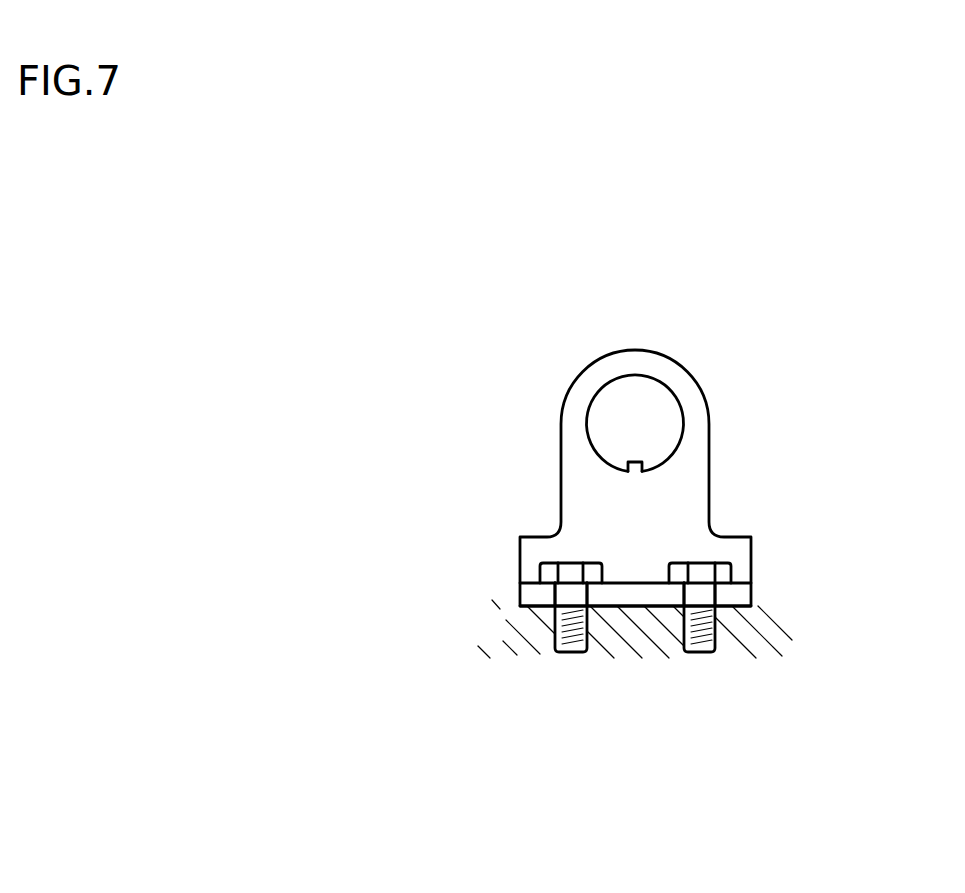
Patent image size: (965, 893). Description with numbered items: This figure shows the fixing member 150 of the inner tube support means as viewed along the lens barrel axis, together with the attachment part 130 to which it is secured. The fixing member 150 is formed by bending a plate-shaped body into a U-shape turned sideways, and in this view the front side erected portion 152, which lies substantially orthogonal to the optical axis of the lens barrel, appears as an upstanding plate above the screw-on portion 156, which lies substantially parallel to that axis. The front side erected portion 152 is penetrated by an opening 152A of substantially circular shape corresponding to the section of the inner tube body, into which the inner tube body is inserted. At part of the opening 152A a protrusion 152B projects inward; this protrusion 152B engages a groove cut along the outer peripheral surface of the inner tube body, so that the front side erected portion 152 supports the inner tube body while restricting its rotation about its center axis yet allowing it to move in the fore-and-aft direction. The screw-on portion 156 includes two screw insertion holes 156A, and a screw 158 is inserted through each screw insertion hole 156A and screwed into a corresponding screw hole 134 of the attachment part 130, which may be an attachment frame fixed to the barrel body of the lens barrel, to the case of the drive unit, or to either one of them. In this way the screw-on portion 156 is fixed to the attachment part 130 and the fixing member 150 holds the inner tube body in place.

The attachment part 130 is at (502, 647).
The screw hole 134 is at (567, 650).
The fixing member 150 is at (679, 557).
The front side erected portion 152 is at (626, 478).
The opening 152A is at (674, 449).
The protrusion 152B is at (628, 464).
The screw-on portion 156 is at (588, 655).
The screw insertion holes 156A is at (684, 650).
The screw 158 is at (563, 573).